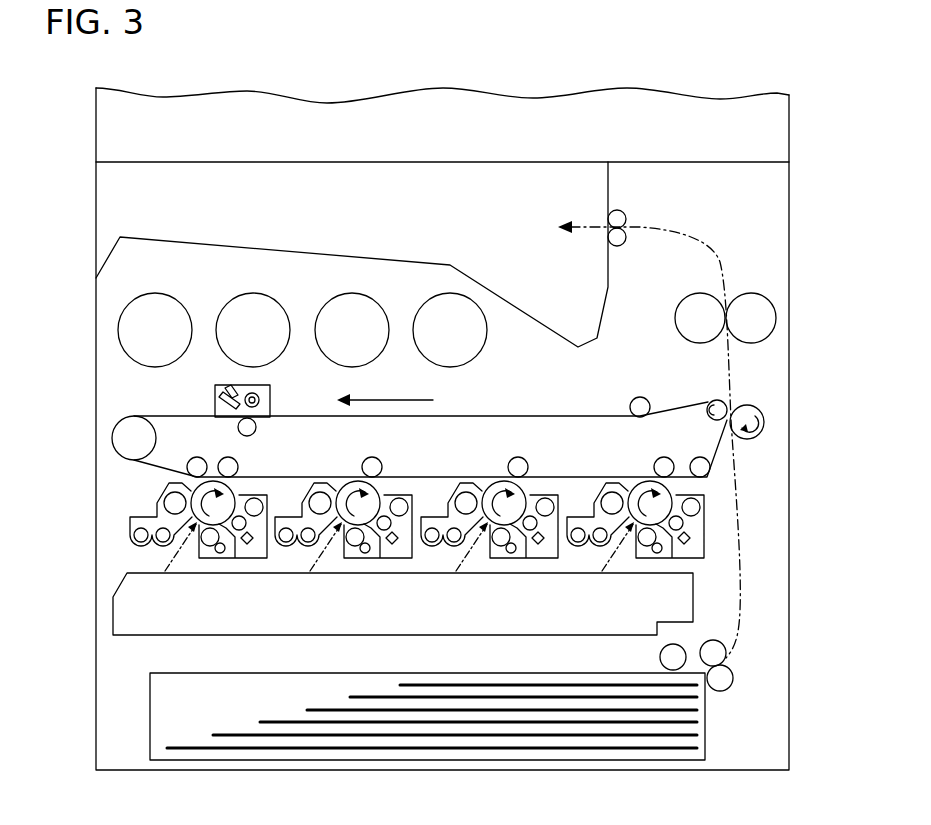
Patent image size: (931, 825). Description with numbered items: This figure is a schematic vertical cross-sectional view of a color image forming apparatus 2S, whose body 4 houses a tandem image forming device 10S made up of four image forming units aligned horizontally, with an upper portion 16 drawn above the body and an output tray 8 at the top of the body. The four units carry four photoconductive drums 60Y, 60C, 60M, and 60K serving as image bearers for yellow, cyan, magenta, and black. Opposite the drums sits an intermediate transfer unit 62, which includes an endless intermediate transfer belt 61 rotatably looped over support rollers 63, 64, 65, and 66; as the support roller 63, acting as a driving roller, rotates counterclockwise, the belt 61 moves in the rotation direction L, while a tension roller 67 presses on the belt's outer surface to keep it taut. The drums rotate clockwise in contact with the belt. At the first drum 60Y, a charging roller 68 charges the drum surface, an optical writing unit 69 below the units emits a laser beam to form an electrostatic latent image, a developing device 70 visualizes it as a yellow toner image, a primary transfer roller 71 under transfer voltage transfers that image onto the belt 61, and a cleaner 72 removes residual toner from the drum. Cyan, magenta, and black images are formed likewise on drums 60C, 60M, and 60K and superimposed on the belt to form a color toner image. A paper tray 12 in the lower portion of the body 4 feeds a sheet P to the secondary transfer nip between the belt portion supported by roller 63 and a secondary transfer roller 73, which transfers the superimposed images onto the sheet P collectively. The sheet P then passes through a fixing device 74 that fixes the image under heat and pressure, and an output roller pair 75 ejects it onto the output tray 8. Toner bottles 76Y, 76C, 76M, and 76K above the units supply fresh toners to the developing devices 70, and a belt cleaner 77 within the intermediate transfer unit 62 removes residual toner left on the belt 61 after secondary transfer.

The image forming apparatus 2S is at (676, 63).
The document reading unit 16 is at (789, 126).
The body 4 is at (790, 511).
The output tray 8 is at (496, 291).
The output roller pair 75 is at (623, 229).
The fixing device 74 is at (752, 292).
The toner bottle 76Y is at (150, 294).
The toner bottle 76C is at (230, 298).
The toner bottle 76M is at (329, 298).
The toner bottle 76K is at (425, 298).
The intermediate transfer belt 61 is at (480, 415).
The intermediate transfer unit 62 is at (538, 404).
The rotation direction L is at (385, 391).
The support roller 64 is at (136, 426).
The belt cleaner 77 is at (270, 396).
The support roller 65 is at (197, 457).
The primary transfer roller 71 is at (228, 457).
The tension roller 67 is at (637, 398).
The support roller 63 is at (710, 401).
The secondary transfer roller 73 is at (752, 406).
The support roller 66 is at (712, 470).
The tandem image forming device 10S is at (117, 472).
The developing device 70 is at (150, 516).
The charging roller 68 is at (213, 560).
The photoconductive drum 60Y is at (238, 482).
The cleaner 72 is at (283, 502).
The photoconductive drum 60C is at (382, 482).
The photoconductive drum 60M is at (528, 482).
The photoconductive drum 60K is at (642, 483).
The optical writing unit 69 is at (695, 600).
The paper tray 12 is at (705, 727).
The sheet P is at (545, 690).